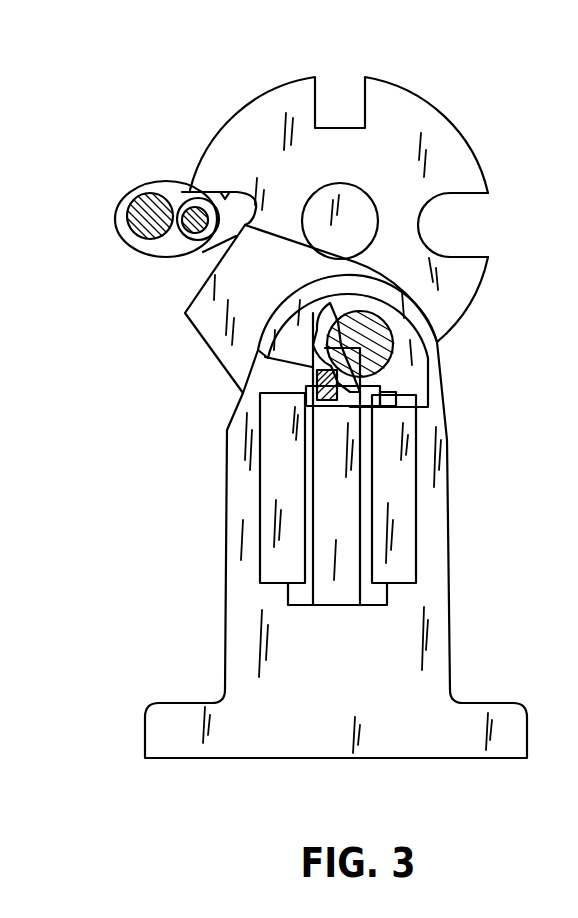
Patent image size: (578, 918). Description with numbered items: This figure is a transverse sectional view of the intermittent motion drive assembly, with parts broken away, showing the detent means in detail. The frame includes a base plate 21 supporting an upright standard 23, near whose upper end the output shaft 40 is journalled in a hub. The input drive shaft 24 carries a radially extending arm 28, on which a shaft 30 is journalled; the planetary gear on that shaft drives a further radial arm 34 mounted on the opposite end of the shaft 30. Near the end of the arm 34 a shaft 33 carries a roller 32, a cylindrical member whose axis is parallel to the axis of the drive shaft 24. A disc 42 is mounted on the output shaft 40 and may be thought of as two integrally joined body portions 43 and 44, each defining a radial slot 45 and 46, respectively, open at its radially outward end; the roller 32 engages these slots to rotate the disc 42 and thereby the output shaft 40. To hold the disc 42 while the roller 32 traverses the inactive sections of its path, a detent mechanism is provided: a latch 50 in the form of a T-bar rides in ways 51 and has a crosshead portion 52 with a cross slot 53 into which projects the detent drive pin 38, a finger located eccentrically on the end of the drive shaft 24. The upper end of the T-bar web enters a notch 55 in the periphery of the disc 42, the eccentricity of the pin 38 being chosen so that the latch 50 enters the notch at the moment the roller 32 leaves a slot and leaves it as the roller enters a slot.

The base plate 21 is at (462, 720).
The upright standard 23 is at (443, 632).
The input drive shaft 24 is at (433, 367).
The radially extending arm 28 is at (207, 330).
The shaft 30 is at (127, 228).
The roller 32 is at (184, 190).
The shaft 33 is at (185, 258).
The radial arm 34 is at (118, 186).
The detent drive pin 38 is at (330, 413).
The output shaft 40 is at (365, 205).
The disc 42 is at (432, 100).
The body portion 43 is at (263, 163).
The body portion 44 is at (422, 200).
The radial slot 45 is at (227, 193).
The radial slot 46 is at (470, 193).
The latch 50 is at (347, 590).
The ways 51 is at (405, 488).
The crosshead portion 52 is at (316, 428).
The cross slot 53 is at (312, 376).
The notch 55 is at (335, 347).